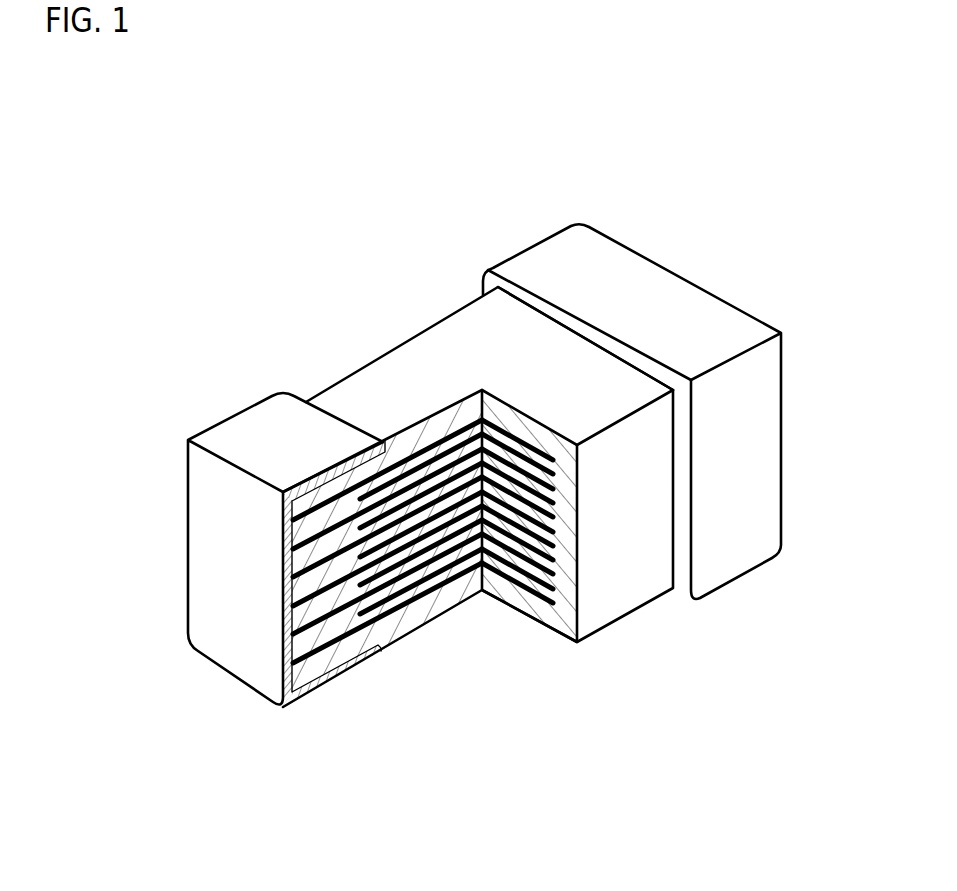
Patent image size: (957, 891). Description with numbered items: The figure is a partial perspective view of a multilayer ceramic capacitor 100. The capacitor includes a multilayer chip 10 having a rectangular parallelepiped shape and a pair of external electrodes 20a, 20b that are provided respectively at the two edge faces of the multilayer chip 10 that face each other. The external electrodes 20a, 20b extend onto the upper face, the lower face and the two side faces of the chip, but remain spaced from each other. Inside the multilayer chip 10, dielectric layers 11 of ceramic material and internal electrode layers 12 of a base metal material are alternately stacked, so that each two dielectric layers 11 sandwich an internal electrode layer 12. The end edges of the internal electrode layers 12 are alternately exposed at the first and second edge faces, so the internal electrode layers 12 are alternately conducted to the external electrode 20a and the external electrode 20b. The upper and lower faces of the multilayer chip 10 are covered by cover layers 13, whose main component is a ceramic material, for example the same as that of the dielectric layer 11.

The multilayer ceramic capacitor 100 is at (881, 153).
The multilayer chip 10 is at (450, 497).
The dielectric layer 11 is at (403, 598).
The internal electrode layer 12 is at (380, 645).
The cover layer 13 is at (452, 332).
The external electrode 20a is at (213, 420).
The external electrode 20b is at (537, 260).